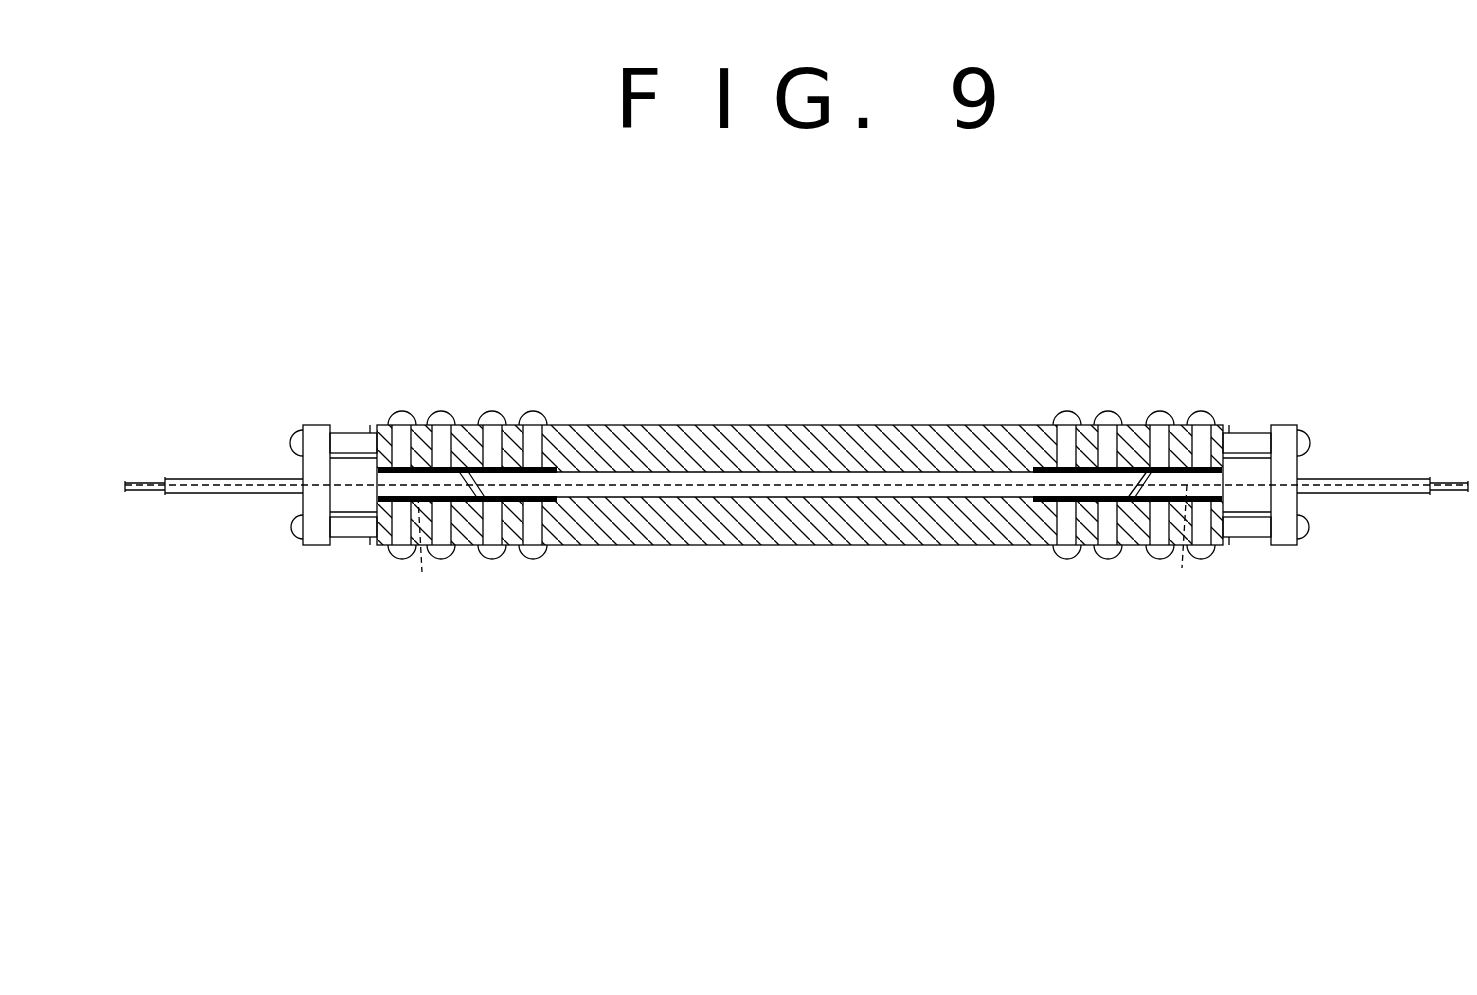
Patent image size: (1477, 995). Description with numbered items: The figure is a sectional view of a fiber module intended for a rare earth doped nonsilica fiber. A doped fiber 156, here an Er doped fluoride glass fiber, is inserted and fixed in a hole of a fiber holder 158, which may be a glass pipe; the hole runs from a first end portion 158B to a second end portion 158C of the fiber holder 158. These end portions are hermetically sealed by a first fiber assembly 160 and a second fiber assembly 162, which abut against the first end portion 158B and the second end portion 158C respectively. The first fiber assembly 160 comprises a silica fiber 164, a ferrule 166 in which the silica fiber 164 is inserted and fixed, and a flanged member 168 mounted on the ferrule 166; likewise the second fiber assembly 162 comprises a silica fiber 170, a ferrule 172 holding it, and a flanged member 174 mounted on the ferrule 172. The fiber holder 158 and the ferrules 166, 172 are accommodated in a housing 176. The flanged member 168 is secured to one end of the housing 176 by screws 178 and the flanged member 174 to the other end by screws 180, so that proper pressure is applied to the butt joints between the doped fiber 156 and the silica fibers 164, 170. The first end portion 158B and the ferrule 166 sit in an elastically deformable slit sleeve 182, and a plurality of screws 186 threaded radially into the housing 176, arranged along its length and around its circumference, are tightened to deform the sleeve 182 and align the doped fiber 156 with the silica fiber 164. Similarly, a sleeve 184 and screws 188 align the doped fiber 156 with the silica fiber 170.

The doped fiber 156 is at (743, 485).
The fiber holder 158 is at (697, 473).
The first end portion 158B is at (481, 502).
The second end portion 158C is at (1129, 500).
The first fiber assembly 160 is at (312, 583).
The second fiber assembly 162 is at (1288, 583).
The silica fiber 164 is at (428, 549).
The ferrule 166 is at (372, 545).
The flanged member 168 is at (307, 470).
The silica fiber 170 is at (1173, 542).
The ferrule 172 is at (1235, 545).
The flanged member 174 is at (1302, 465).
The housing 176 is at (887, 543).
The screws 178 is at (287, 430).
The screws 180 is at (1313, 433).
The sleeve 182 is at (556, 476).
The sleeve 184 is at (1033, 477).
The screws 186 is at (440, 414).
The screws 188 is at (1067, 413).